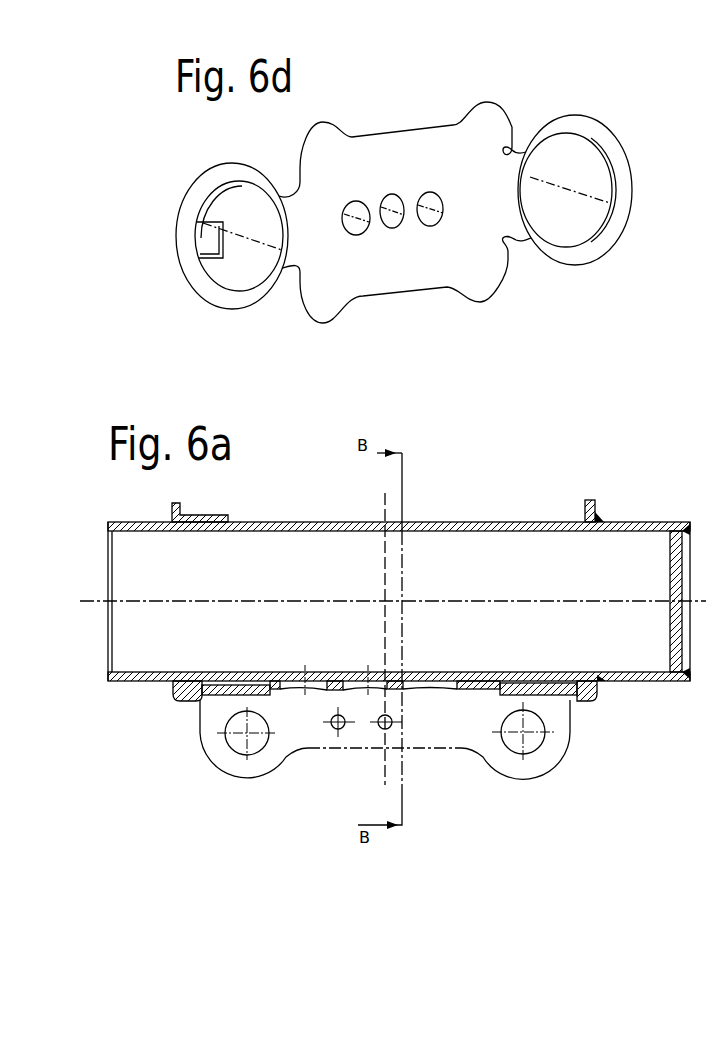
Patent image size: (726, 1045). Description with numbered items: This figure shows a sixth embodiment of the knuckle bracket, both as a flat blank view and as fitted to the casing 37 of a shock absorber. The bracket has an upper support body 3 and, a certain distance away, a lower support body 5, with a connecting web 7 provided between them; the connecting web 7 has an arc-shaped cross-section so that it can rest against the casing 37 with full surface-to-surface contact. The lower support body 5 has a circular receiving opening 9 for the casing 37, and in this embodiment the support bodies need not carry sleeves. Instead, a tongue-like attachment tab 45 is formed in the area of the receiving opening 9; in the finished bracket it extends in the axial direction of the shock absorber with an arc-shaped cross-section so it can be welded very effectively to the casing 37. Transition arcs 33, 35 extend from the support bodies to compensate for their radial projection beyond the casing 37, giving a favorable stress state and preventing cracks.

In FIG. 6d, the upper support body 3 is at (578, 282).
In FIG. 6a, the upper support body 3 is at (594, 521).
In FIG. 6d, the lower support body 5 is at (222, 156).
In FIG. 6a, the lower support body 5 is at (172, 690).
In FIG. 6d, the connecting web 7 is at (390, 183).
In FIG. 6d, the circular opening 9 is at (260, 208).
In FIG. 6a, the transition arc 33 is at (590, 704).
In FIG. 6a, the transition arc 35 is at (181, 702).
In FIG. 6a, the casing 37 is at (470, 514).
In FIG. 6d, the attachment tab 45 is at (210, 247).
In FIG. 6a, the attachment tab 45 is at (210, 516).